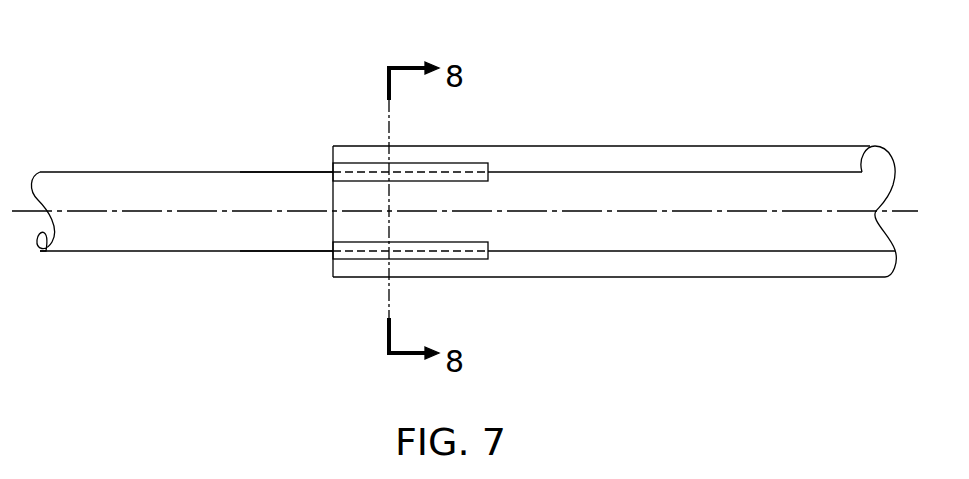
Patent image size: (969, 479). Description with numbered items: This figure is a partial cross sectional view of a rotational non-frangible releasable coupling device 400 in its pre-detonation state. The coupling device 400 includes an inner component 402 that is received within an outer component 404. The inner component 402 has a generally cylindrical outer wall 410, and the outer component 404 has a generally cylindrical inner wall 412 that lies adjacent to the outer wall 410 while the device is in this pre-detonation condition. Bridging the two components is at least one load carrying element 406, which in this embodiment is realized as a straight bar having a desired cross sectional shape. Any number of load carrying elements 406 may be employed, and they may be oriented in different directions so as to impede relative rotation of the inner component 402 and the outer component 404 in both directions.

The rotational non-frangible releasable coupling device 400 is at (238, 86).
The inner component 402 is at (124, 190).
The outer component 404 is at (685, 190).
The load carrying element 406 is at (337, 165).
The outer wall 410 is at (262, 172).
The inner wall 412 is at (757, 172).